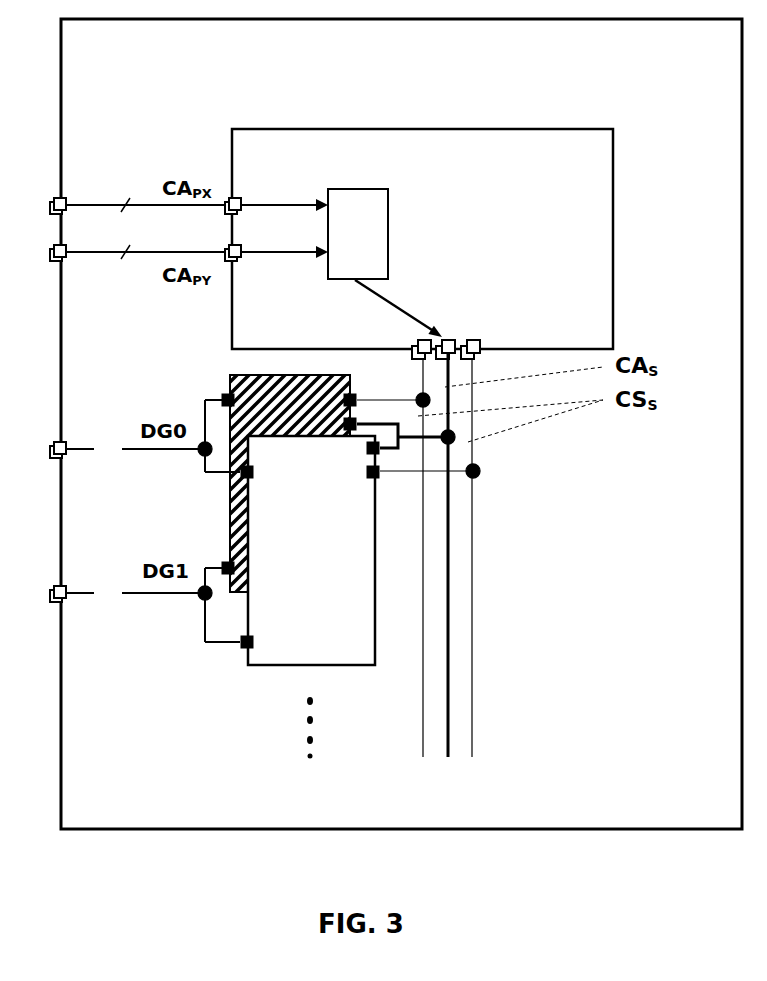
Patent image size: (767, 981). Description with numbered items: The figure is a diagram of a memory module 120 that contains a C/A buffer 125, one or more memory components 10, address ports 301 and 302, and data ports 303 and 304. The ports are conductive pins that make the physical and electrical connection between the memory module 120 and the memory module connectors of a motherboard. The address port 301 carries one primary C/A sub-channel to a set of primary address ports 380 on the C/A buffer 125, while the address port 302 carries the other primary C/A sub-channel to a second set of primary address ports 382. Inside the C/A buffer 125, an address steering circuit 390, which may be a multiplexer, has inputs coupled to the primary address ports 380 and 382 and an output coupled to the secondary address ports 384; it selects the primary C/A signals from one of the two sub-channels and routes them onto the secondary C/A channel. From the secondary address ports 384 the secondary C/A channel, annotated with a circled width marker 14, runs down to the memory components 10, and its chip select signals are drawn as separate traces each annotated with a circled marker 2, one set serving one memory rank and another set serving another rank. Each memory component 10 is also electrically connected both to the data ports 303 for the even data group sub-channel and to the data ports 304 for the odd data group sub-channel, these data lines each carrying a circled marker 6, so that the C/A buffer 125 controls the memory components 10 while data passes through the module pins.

The memory module 120 is at (401, 424).
The C/A buffer 125 is at (422, 239).
The address steering circuit 390 is at (358, 234).
The address port 301 is at (66, 200).
The address port 302 is at (66, 260).
The data port 303 is at (66, 443).
The data port 304 is at (66, 602).
The primary address ports 380 is at (241, 200).
The primary address ports 382 is at (241, 247).
The secondary address ports 384 is at (446, 338).
The memory component 10 is at (302, 520).
The 14-bit command/address bus 14 is at (443, 555).
The 2-bit chip select lines 2 is at (448, 558).
The 6-bit data group lines 6 is at (153, 521).